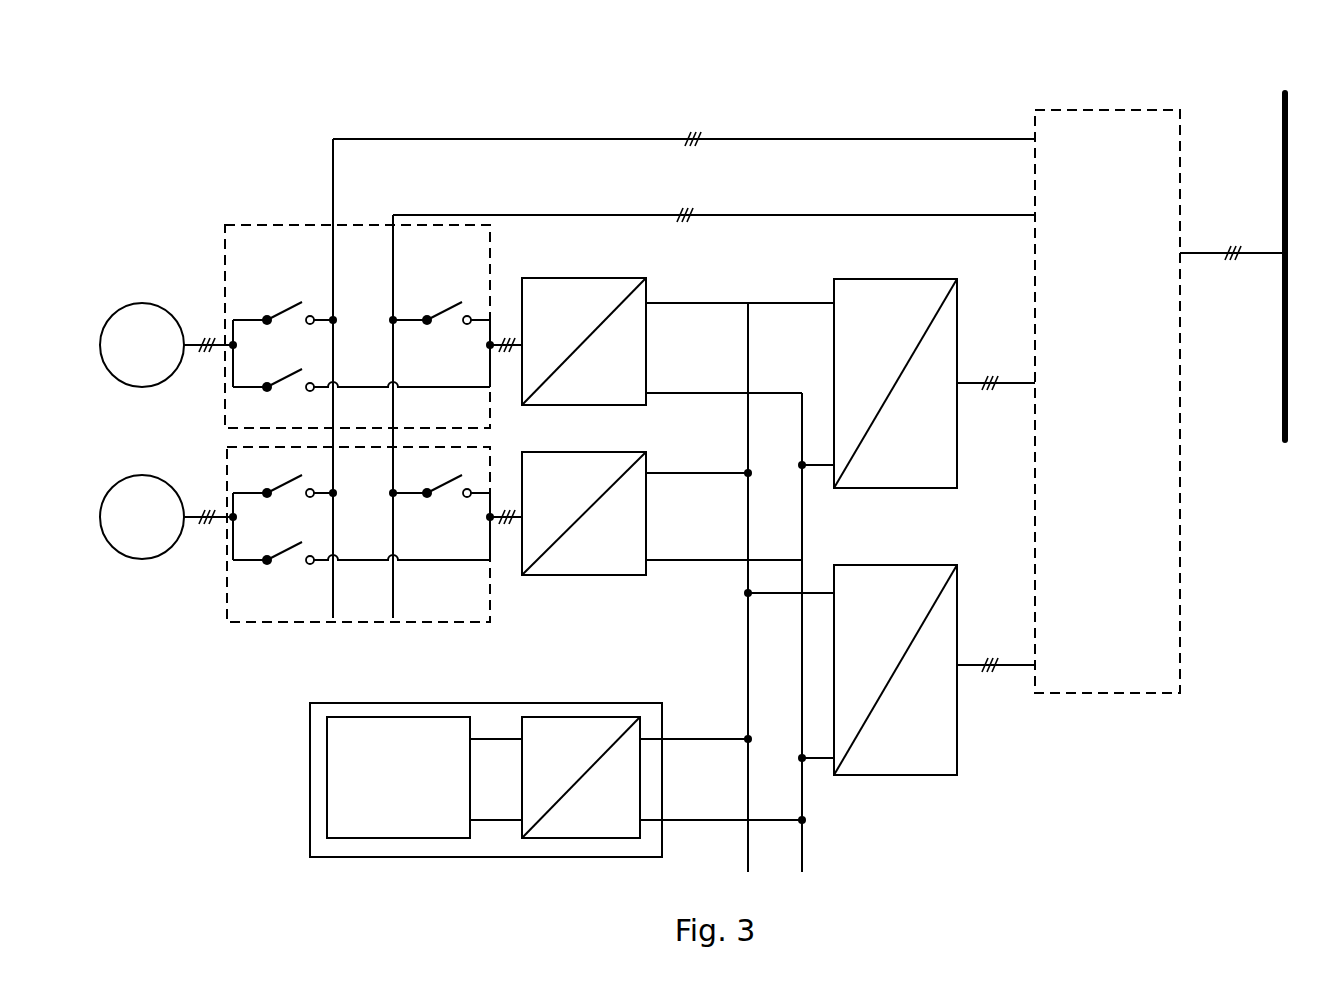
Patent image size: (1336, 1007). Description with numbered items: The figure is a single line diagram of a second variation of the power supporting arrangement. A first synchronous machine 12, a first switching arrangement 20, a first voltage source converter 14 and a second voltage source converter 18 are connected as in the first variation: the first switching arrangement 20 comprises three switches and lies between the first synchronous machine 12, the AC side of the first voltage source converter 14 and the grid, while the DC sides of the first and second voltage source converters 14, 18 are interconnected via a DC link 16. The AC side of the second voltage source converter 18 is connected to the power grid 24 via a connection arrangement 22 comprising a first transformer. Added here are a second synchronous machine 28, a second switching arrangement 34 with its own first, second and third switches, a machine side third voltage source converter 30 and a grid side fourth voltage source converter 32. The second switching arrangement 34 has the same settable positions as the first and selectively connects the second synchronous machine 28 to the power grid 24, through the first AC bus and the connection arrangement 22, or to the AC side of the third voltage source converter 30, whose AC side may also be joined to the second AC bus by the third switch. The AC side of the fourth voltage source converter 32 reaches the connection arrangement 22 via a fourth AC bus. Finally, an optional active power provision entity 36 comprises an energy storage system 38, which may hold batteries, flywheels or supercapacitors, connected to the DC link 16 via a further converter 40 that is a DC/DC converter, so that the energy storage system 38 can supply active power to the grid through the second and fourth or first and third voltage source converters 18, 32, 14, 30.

The first synchronous machine 12 is at (166, 317).
The second synchronous machine 28 is at (166, 491).
The first switching arrangement 20 is at (268, 225).
The second switching arrangement 34 is at (295, 623).
The first voltage source converter 14 is at (584, 311).
The third voltage source converter 30 is at (584, 547).
The second voltage source converter 18 is at (934, 415).
The fourth voltage source converter 32 is at (934, 703).
The DC link 16 is at (740, 587).
The connection arrangement 22 is at (1160, 401).
The power grid 24 is at (1284, 234).
The active power provision entity 36 is at (506, 797).
The energy storage system 38 is at (398, 777).
The further converter 40 is at (581, 777).